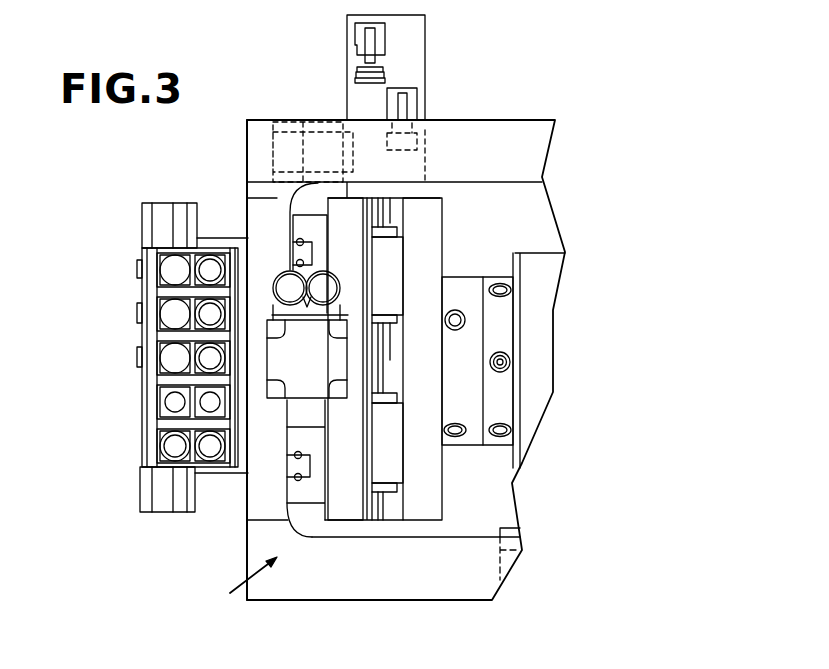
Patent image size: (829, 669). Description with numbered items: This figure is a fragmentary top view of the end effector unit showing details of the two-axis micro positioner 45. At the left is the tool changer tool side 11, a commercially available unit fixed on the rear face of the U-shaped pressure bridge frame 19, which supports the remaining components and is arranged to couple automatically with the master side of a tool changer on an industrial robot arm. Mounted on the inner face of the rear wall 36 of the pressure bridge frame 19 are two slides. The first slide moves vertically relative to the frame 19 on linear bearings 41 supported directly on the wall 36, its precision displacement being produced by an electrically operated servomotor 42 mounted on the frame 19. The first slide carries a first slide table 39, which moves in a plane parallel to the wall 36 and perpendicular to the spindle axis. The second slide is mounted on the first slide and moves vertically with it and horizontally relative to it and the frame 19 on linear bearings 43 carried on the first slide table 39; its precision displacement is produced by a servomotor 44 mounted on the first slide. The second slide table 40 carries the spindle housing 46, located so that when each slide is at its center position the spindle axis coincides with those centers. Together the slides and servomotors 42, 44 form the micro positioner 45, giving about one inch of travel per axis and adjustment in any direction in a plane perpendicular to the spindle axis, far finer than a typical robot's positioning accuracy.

The tool changer tool side 11 is at (137, 360).
The pressure bridge frame 19 is at (522, 127).
The rear wall 36 is at (262, 222).
The first slide table 39 is at (343, 502).
The second slide table 40 is at (428, 228).
The linear bearings 41 is at (310, 217).
The servomotor 42 is at (300, 352).
The linear bearings 43 is at (390, 473).
The servomotor 44 is at (427, 38).
The two-axis micro positioner 45 is at (223, 601).
The spindle housing 46 is at (537, 263).